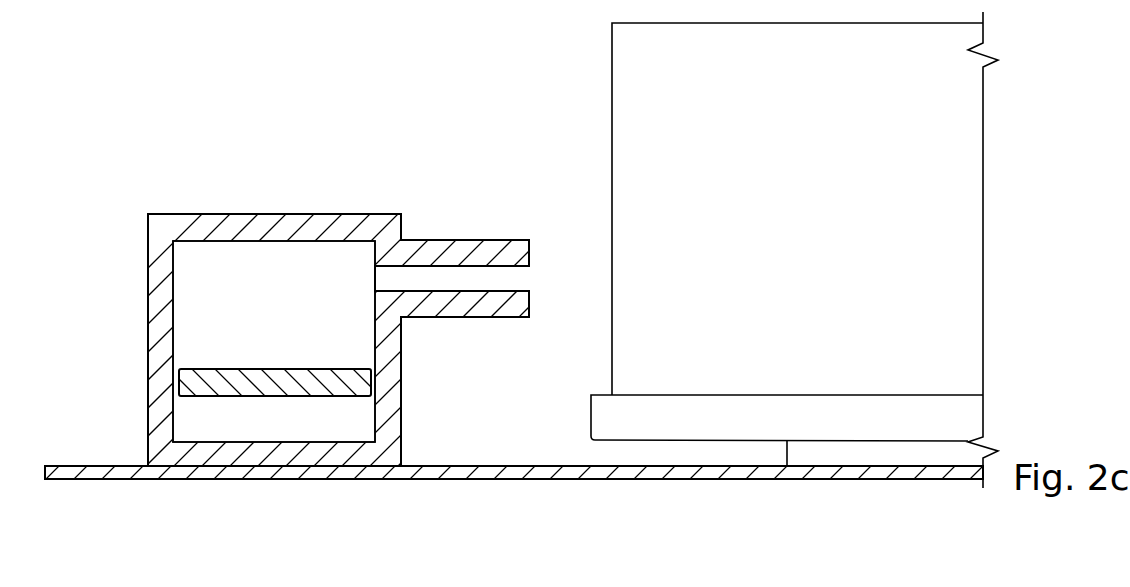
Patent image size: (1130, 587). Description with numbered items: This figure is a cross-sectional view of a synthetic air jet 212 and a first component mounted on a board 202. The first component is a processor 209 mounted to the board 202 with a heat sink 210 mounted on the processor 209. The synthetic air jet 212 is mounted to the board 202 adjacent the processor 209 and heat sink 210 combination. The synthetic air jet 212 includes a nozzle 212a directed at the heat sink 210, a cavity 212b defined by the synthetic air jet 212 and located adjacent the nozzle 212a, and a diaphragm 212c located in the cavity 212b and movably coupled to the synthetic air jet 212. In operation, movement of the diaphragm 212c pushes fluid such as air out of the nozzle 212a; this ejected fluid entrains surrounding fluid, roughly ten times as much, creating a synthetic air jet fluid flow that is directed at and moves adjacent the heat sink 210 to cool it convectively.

The board 202 is at (101, 481).
The processor 209 is at (893, 458).
The heat sink 210 is at (817, 223).
The synthetic air jet 212 is at (231, 211).
The nozzle 212a is at (456, 248).
The cavity 212b is at (190, 298).
The diaphragm 212c is at (275, 375).